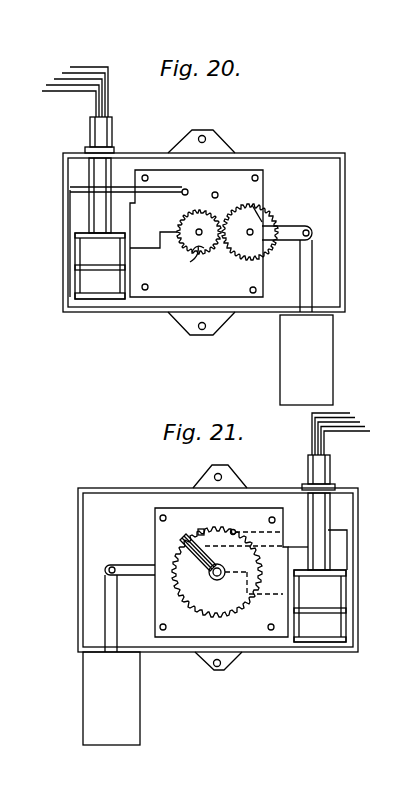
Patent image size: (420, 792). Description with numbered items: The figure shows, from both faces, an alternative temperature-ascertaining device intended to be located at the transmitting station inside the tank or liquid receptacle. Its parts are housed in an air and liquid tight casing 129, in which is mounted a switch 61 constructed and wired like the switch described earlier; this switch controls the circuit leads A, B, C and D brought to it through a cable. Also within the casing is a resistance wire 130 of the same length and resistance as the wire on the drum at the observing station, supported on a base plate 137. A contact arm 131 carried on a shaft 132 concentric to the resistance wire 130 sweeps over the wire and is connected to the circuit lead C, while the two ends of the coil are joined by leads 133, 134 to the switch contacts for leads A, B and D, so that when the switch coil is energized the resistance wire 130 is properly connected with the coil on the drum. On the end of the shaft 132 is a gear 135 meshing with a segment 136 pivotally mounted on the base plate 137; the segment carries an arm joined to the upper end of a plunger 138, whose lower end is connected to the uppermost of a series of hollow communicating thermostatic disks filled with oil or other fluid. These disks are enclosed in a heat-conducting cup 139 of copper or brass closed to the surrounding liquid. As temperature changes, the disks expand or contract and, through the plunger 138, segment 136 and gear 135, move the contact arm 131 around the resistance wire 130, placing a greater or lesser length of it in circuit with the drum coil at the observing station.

In FIG. 20, the switch 61 is at (124, 47).
In FIG. 21, the switch 61 is at (347, 414).
In FIG. 20, the casing 129 is at (343, 138).
In FIG. 21, the casing 129 is at (358, 542).
In FIG. 21, the resistance wire 130 is at (170, 553).
In FIG. 21, the contact arm 131 is at (185, 537).
In FIG. 20, the shaft 132 is at (207, 250).
In FIG. 21, the shaft 132 is at (214, 582).
In FIG. 21, the lead 133 is at (200, 529).
In FIG. 21, the lead 134 is at (236, 530).
In FIG. 20, the gear 135 is at (192, 258).
In FIG. 20, the segment 136 is at (255, 218).
In FIG. 20, the base plate 137 is at (240, 288).
In FIG. 21, the base plate 137 is at (260, 628).
In FIG. 20, the plunger 138 is at (308, 282).
In FIG. 21, the plunger 138 is at (107, 622).
In FIG. 20, the cup 139 is at (306, 360).
In FIG. 21, the cup 139 is at (111, 698).
In FIG. 20, the circuit lead A is at (108, 88).
In FIG. 21, the circuit lead A is at (368, 423).
In FIG. 20, the circuit lead B is at (108, 105).
In FIG. 21, the circuit lead B is at (375, 427).
In FIG. 20, the circuit lead C is at (93, 98).
In FIG. 21, the circuit lead C is at (375, 432).
In FIG. 20, the circuit lead D is at (90, 110).
In FIG. 21, the circuit lead D is at (363, 433).